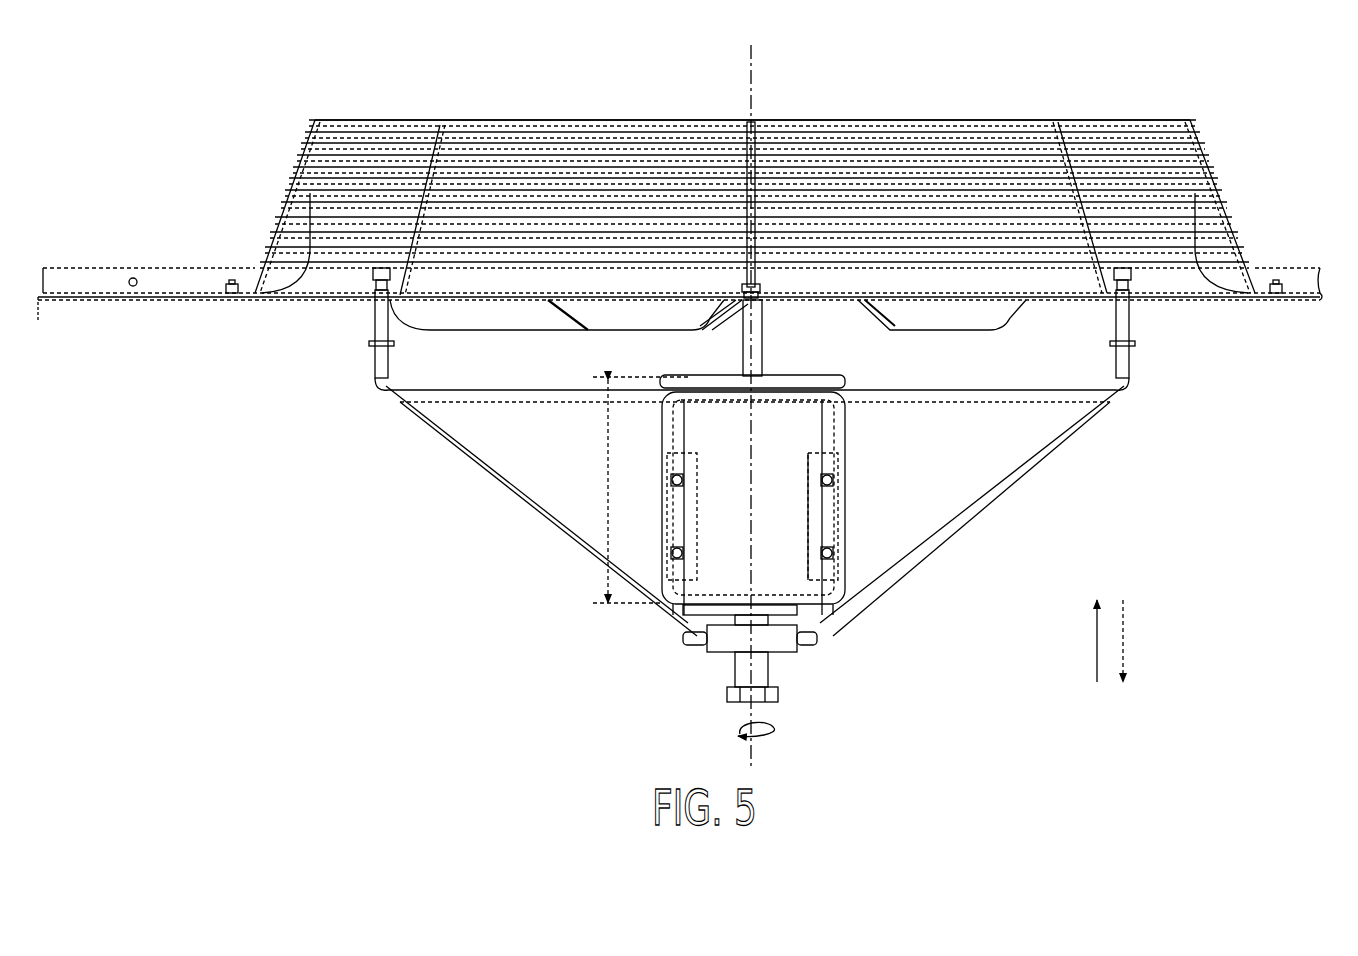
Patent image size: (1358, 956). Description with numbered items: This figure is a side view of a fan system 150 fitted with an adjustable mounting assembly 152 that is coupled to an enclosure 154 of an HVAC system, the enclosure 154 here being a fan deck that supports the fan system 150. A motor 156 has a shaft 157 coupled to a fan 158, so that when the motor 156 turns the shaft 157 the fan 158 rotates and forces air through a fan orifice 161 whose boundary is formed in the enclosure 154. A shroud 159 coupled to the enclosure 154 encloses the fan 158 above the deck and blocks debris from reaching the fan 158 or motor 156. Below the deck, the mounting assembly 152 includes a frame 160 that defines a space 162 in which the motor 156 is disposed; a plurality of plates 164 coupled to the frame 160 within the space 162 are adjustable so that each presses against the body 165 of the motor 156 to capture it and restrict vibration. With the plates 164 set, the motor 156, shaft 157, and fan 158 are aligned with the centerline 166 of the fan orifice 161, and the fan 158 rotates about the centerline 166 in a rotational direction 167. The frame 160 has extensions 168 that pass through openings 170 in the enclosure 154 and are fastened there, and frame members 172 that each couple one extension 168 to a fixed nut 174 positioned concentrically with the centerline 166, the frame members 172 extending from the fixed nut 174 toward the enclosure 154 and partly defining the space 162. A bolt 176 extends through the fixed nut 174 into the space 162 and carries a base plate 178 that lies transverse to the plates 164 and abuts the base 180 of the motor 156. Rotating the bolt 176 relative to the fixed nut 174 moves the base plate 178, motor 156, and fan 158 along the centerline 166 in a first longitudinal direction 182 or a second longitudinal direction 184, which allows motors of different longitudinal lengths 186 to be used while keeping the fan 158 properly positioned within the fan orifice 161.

The fan system 150 is at (1255, 112).
The mounting assembly 152 is at (668, 690).
The enclosure 154 is at (152, 268).
The motor 156 is at (692, 384).
The shaft 157 is at (762, 330).
The fan 158 is at (445, 322).
The shroud 159 is at (388, 120).
The frame 160 is at (405, 447).
The fan orifice 161 is at (304, 205).
The space 162 is at (850, 383).
The plates 164 is at (700, 515).
The body 165 is at (795, 546).
The centerline 166 is at (762, 82).
The rotational direction 167 is at (774, 730).
The extensions 168 is at (372, 285).
The openings 170 is at (378, 346).
The frame members 172 is at (545, 522).
The fixed nut 174 is at (728, 650).
The bolt 176 is at (765, 665).
The base plate 178 is at (688, 636).
The base 180 is at (818, 626).
The first longitudinal direction 182 is at (1097, 642).
The second longitudinal direction 184 is at (1123, 630).
The longitudinal lengths 186 is at (639, 490).